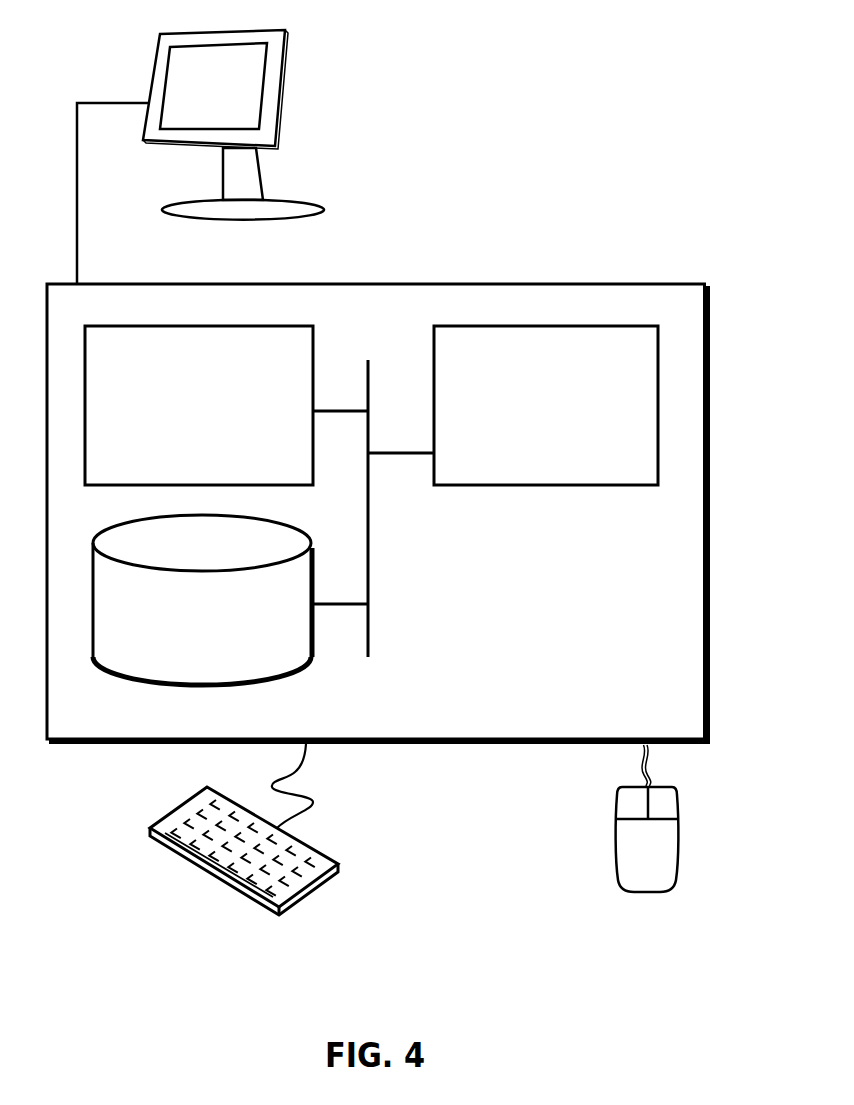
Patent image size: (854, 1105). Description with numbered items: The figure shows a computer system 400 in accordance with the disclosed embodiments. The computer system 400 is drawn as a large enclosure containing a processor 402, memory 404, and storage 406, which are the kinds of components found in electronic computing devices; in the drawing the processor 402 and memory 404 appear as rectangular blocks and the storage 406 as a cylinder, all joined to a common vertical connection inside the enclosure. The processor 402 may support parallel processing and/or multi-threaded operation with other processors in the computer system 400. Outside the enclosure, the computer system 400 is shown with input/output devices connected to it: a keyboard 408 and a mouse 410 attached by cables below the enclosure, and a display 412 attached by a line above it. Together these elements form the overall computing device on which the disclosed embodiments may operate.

The computer system 400 is at (422, 262).
The processor 402 is at (527, 417).
The memory 404 is at (178, 417).
The storage 406 is at (185, 629).
The keyboard 408 is at (168, 847).
The mouse 410 is at (626, 858).
The display 412 is at (200, 157).